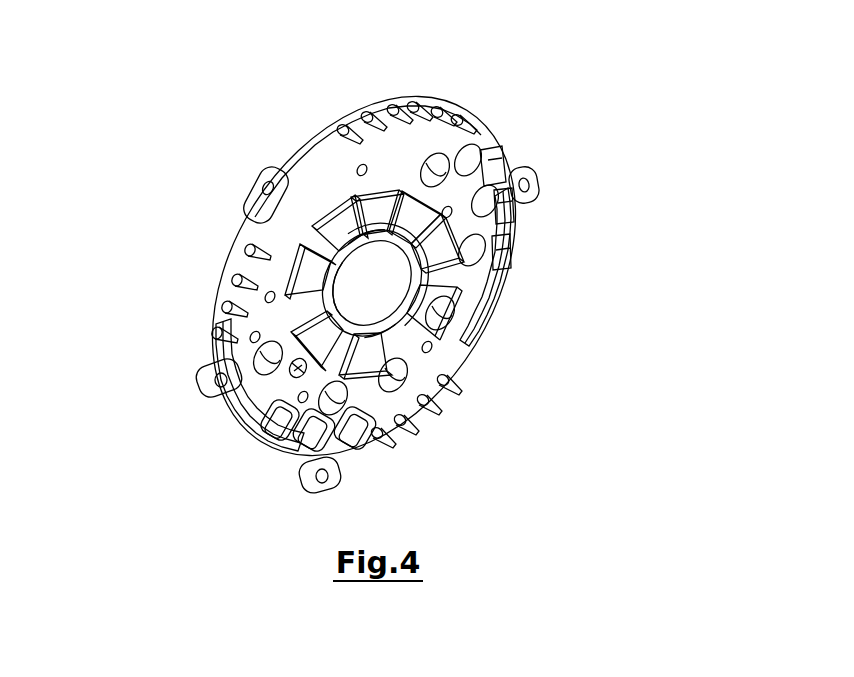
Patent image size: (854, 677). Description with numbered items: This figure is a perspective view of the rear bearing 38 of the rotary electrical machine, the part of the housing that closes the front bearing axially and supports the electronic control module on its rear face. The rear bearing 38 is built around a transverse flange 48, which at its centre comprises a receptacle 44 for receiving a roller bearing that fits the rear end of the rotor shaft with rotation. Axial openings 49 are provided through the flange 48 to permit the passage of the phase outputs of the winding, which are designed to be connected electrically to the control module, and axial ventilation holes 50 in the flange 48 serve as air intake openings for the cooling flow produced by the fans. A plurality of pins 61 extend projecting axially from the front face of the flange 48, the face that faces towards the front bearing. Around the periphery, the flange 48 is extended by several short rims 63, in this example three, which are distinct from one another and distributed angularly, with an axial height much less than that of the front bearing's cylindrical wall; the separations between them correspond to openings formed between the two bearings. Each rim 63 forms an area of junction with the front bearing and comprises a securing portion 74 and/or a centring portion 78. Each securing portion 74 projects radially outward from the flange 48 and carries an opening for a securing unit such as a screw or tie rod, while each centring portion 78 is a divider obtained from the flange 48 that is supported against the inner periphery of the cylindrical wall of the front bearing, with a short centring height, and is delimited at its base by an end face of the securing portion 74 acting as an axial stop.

The rear bearing 38 is at (178, 147).
The receptacle 44 is at (483, 293).
The transverse flange 48 is at (232, 281).
The axial openings 49 is at (480, 203).
The axial ventilation holes 50 is at (297, 242).
The pins 61 is at (393, 105).
The rim 63 is at (265, 204).
The securing portion 74 is at (258, 178).
The centring portion (divider) 78 is at (487, 317).